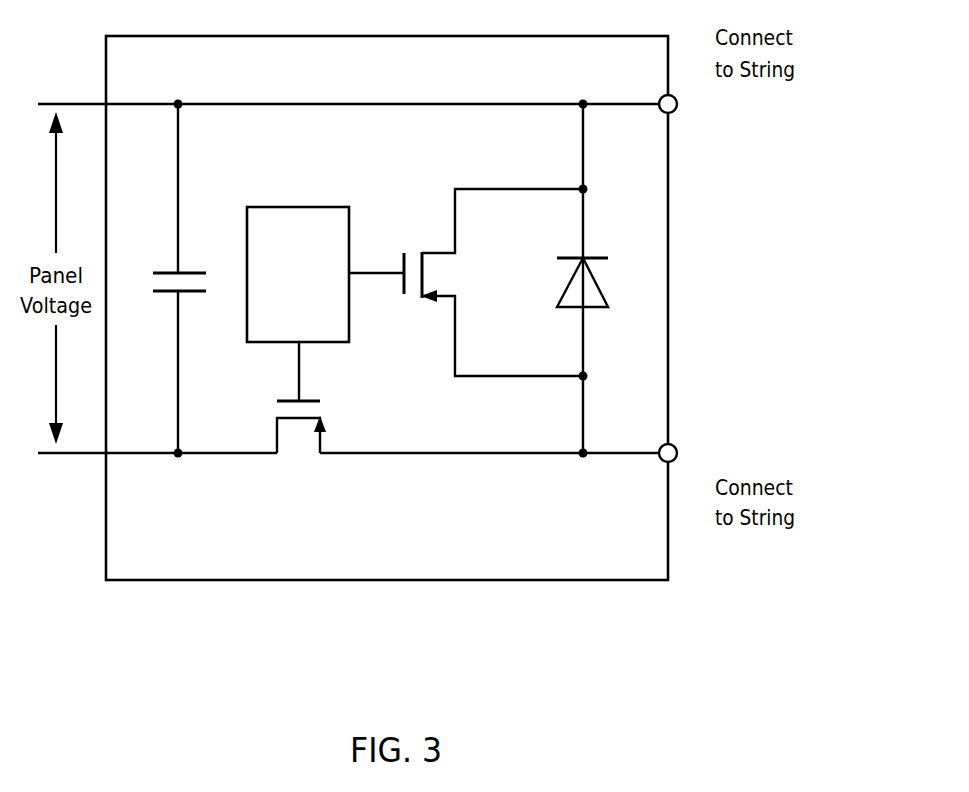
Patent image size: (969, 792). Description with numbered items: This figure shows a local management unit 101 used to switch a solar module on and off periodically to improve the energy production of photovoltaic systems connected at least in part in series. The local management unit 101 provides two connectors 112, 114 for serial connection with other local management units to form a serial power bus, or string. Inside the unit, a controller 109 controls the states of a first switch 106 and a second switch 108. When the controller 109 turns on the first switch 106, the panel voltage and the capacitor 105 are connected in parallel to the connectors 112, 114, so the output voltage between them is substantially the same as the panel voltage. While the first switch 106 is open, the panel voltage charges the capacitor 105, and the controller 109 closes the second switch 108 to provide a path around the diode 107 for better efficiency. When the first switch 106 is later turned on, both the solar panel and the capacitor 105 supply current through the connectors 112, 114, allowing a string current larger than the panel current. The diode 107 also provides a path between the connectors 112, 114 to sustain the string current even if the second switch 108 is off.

The local management unit 101 is at (620, 549).
The capacitor C1 105 is at (162, 294).
The switch Q1 106 is at (292, 400).
The diode D1 107 is at (603, 257).
The switch Q2 108 is at (403, 280).
The controller 109 is at (285, 300).
The connector 112 is at (675, 111).
The connector 114 is at (675, 446).